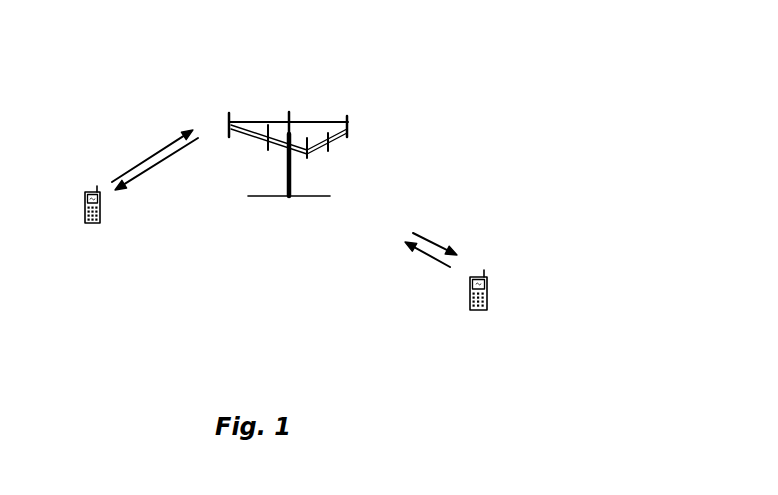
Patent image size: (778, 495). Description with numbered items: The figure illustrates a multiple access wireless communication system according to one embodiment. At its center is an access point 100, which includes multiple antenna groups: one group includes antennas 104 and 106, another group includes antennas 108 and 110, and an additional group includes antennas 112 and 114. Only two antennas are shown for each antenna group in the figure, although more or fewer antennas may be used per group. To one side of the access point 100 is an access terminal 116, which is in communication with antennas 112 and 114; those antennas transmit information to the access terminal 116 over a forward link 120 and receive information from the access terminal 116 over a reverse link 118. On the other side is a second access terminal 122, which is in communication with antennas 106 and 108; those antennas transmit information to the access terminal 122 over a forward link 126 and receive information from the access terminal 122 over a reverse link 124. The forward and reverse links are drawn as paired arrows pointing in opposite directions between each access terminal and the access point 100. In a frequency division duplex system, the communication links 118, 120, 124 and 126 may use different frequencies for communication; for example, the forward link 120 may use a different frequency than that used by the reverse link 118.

The access point 100 is at (276, 197).
The antenna 104 is at (307, 158).
The antenna 106 is at (328, 150).
The antenna 108 is at (348, 137).
The antenna 110 is at (290, 113).
The antenna 112 is at (232, 121).
The antenna 114 is at (268, 150).
The access terminal 116 is at (95, 188).
The reverse link 118 is at (155, 156).
The forward link 120 is at (162, 165).
The access terminal 122 is at (483, 271).
The reverse link 124 is at (417, 253).
The forward link 126 is at (438, 244).